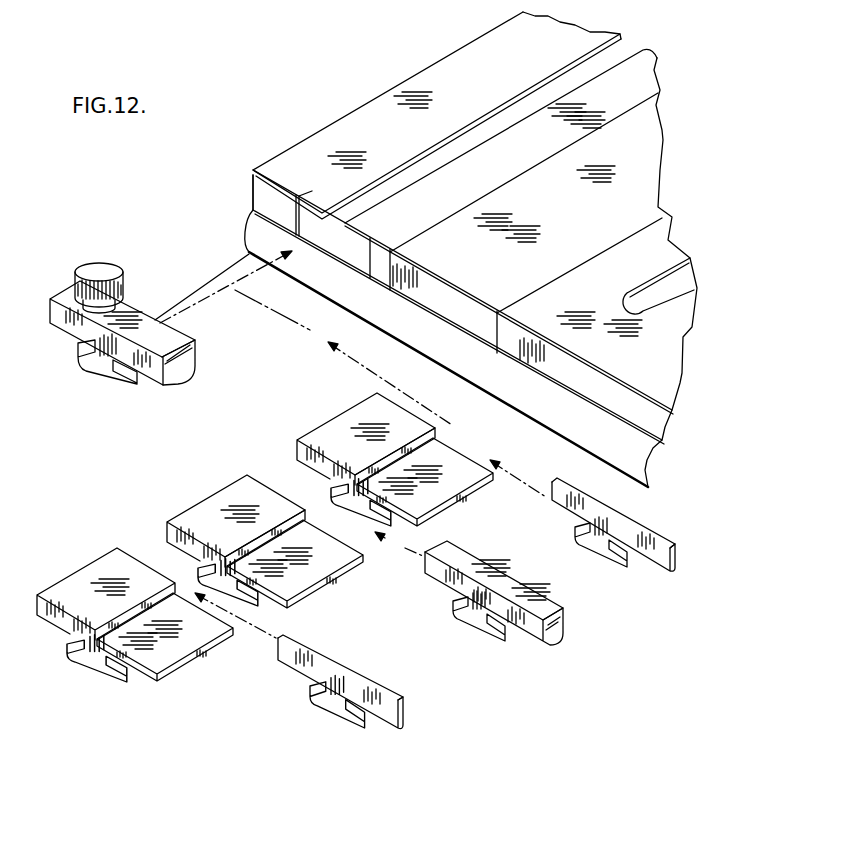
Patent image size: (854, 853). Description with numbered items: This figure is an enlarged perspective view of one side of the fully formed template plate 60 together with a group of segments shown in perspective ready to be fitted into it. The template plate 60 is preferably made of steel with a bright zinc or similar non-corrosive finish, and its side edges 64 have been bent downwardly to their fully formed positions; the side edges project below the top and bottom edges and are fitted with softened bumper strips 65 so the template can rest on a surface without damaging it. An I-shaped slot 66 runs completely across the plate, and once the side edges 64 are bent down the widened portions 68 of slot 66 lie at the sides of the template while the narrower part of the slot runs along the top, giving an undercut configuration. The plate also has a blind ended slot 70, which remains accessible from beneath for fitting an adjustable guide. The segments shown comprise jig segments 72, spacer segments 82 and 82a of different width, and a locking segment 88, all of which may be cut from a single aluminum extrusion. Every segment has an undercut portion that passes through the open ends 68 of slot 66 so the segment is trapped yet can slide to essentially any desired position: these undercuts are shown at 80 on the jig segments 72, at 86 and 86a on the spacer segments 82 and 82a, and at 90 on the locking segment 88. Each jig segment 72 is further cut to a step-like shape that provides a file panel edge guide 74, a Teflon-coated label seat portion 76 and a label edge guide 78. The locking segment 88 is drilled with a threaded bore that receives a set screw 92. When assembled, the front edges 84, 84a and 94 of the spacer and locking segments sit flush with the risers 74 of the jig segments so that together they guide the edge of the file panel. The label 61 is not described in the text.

The template plate 60 is at (662, 240).
The raised strip on table 61 is at (653, 118).
The bend down side edges 64 is at (262, 205).
The bumper strips 65 is at (337, 292).
The I-shaped slot 66 is at (500, 113).
The widened portions of slot 68 is at (313, 220).
The blind ended slot 70 is at (626, 290).
The jig segments 72 is at (76, 585).
The file panel edge guide 74 is at (185, 663).
The label seat portion 76 is at (150, 653).
The label edge guide 78 is at (300, 477).
The undercut portion of jig segment 80 is at (85, 663).
The spacer segment 82 is at (457, 560).
The spacer segment 82a is at (290, 660).
The front edge of spacer segment 84 is at (543, 637).
The front edge of spacer segment 84a is at (402, 718).
The undercut portion of spacer segment 86 is at (475, 618).
The undercut portion of spacer segment 86a is at (328, 700).
The locking segment 88 is at (139, 322).
The undercut portion of locking segment 90 is at (98, 360).
The set screw 92 is at (96, 265).
The front edge of locking segment 94 is at (173, 372).